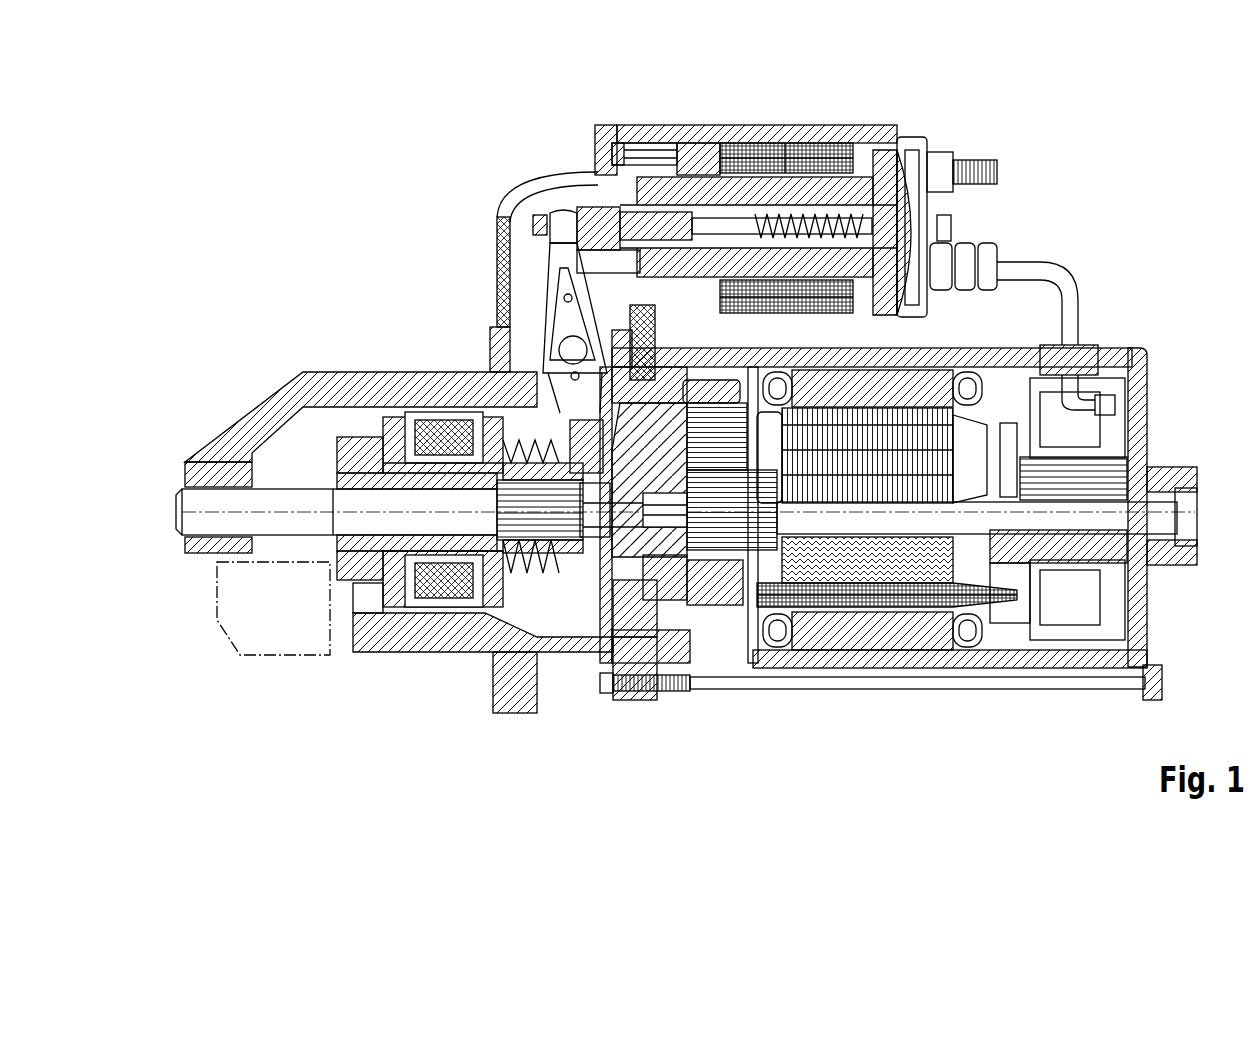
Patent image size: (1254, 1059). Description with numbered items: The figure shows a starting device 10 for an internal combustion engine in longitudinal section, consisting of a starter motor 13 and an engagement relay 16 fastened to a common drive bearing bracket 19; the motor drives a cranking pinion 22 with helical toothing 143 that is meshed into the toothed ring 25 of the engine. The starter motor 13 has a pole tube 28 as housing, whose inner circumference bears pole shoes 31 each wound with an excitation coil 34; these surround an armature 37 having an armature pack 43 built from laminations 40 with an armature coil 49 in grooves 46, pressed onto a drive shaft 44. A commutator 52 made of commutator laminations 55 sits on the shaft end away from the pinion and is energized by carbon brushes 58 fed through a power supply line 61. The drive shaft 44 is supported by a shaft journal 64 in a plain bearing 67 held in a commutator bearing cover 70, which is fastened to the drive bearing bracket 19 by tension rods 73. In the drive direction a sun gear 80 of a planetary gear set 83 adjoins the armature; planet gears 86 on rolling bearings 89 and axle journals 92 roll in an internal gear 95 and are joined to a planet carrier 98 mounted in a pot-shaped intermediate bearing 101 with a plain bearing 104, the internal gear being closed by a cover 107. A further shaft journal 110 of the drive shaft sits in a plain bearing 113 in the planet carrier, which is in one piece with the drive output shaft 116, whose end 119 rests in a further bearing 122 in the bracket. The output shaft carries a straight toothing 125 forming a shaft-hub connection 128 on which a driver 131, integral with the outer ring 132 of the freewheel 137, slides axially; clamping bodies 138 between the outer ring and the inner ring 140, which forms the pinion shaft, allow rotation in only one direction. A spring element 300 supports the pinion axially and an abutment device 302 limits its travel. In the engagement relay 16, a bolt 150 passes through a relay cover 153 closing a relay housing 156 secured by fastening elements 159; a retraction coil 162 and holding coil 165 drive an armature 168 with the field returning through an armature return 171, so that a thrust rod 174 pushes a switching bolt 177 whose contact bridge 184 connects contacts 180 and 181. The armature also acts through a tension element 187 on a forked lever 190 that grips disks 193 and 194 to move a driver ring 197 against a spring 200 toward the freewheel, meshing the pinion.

The starting device 10 is at (1172, 215).
The starter motor 13 is at (1172, 325).
The engagement relay 16 is at (1045, 228).
The drive bearing bracket 19 is at (275, 355).
The cranking pinion 22 is at (345, 420).
The toothed ring 25 is at (286, 692).
The pole tube 28 is at (1010, 662).
The pole shoes 31 is at (898, 376).
The excitation coil 34 is at (975, 657).
The armature 37 is at (930, 632).
The laminations 40 is at (882, 587).
The armature pack 43 is at (860, 592).
The drive shaft 44 is at (1060, 536).
The grooves 46 is at (822, 592).
The armature coil 49 is at (800, 602).
The commutator 52 is at (1122, 602).
The commutator laminations 55 is at (1085, 447).
The carbon brushes 58 is at (1100, 397).
The power supply line 61 is at (1060, 288).
The shaft journal 64 is at (1108, 578).
The plain bearing 67 is at (1152, 490).
The commutator bearing cover 70 is at (1140, 628).
The tension rods 73 is at (1045, 690).
The sun gear 80 is at (705, 522).
The planetary gear set 83 is at (732, 532).
The planet gears 86 is at (715, 562).
The rolling bearings 89 is at (690, 582).
The axle journals 92 is at (652, 592).
The internal gear 95 is at (668, 562).
The planet carrier 98 is at (560, 262).
The intermediate bearing 101 is at (560, 300).
The plain bearing 104 is at (557, 632).
The cover 107 is at (740, 200).
The further shaft journal 110 is at (618, 652).
The plain bearing 113 is at (592, 560).
The drive output shaft 116 is at (345, 552).
The end 119 is at (262, 478).
The further bearing 122 is at (215, 478).
The straight toothing 125 is at (497, 508).
The shaft-hub connection 128 is at (333, 512).
The driver 131 is at (515, 640).
The outer ring 132 is at (405, 600).
The freewheel 137 is at (388, 630).
The clamping bodies 138 is at (430, 430).
The inner ring 140 is at (445, 420).
The helical toothing 143 is at (355, 440).
The bolt 150 is at (990, 165).
The relay cover 153 is at (915, 170).
The relay housing 156 is at (815, 150).
The fastening elements 159 is at (640, 150).
The retraction coil 162 is at (760, 150).
The holding coil 165 is at (785, 165).
The armature 168 is at (705, 150).
The armature return 171 is at (965, 245).
The thrust rod 174 is at (665, 215).
The switching bolt 177 is at (860, 200).
The contact 180 is at (905, 240).
The contact 181 is at (960, 275).
The contact bridge 184 is at (870, 185).
The tension element 187 is at (535, 218).
The lever 190 is at (553, 228).
The disk 193 is at (540, 330).
The disk 194 is at (568, 355).
The driver ring 197 is at (537, 600).
The spring 200 is at (455, 642).
The spring element 300 is at (372, 548).
The abutment device 302 is at (300, 515).